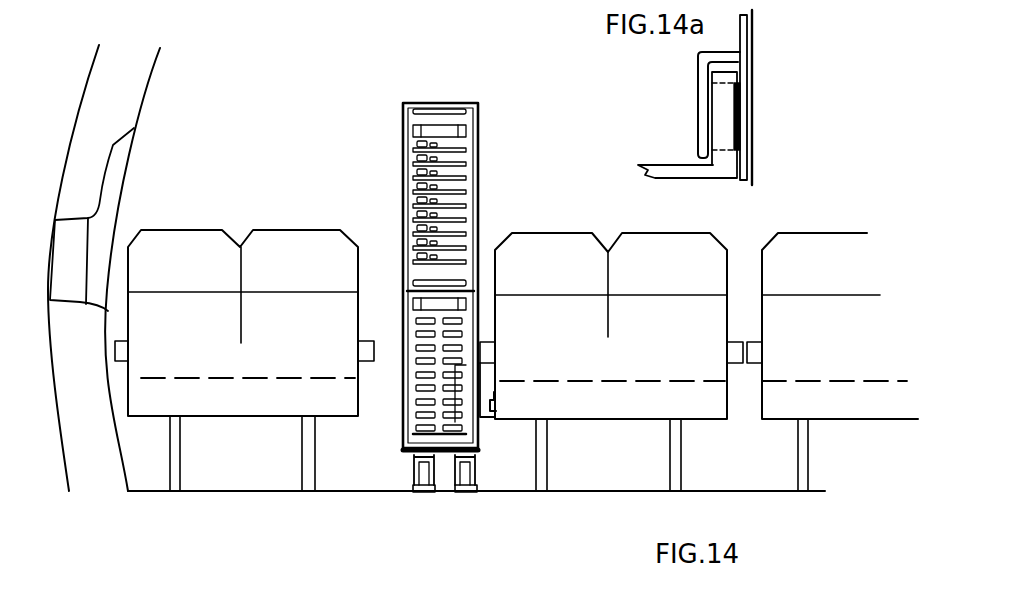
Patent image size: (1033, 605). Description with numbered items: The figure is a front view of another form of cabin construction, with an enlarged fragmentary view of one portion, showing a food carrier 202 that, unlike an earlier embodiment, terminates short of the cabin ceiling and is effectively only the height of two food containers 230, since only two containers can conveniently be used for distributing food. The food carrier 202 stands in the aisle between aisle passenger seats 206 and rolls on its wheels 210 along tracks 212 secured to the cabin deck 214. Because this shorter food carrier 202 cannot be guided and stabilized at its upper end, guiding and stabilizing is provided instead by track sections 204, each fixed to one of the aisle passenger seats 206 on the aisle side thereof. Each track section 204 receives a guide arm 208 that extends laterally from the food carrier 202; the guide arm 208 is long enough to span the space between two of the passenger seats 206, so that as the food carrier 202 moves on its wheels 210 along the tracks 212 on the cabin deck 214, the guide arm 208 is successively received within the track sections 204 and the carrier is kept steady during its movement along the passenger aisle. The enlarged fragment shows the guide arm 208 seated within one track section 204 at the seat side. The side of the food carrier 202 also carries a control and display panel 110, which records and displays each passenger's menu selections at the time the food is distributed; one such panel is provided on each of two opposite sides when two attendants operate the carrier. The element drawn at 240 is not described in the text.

In FIG. 14, the control and display panel 110 is at (438, 103).
In FIG. 14, the food carrier 202 is at (441, 292).
In FIG. 14A, the track sections 204 is at (707, 94).
In FIG. 14, the aisle passenger seats 206 is at (307, 252).
In FIG. 14, the guide arm 208 is at (488, 420).
In FIG. 14A, the guide arm 208 is at (727, 125).
In FIG. 14, the wheels 210 is at (414, 476).
In FIG. 14, the tracks 212 is at (426, 494).
In FIG. 14, the cabin deck 214 is at (340, 493).
In FIG. 14, the food containers 230 is at (463, 159).
In FIG. 14, the latch clamp 240 is at (498, 405).